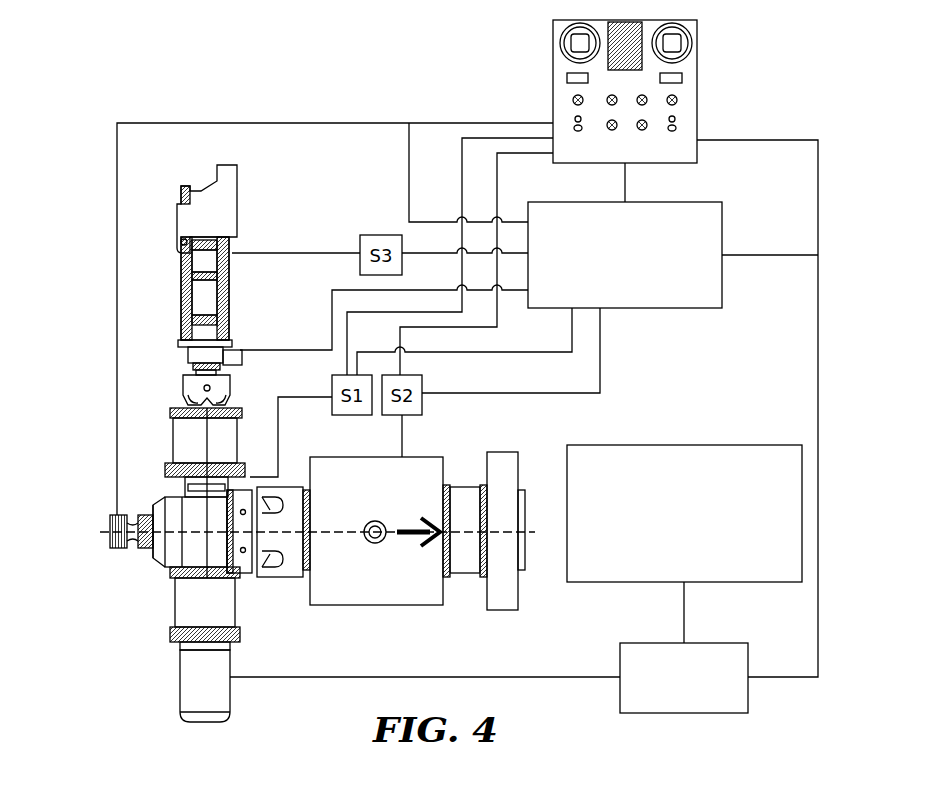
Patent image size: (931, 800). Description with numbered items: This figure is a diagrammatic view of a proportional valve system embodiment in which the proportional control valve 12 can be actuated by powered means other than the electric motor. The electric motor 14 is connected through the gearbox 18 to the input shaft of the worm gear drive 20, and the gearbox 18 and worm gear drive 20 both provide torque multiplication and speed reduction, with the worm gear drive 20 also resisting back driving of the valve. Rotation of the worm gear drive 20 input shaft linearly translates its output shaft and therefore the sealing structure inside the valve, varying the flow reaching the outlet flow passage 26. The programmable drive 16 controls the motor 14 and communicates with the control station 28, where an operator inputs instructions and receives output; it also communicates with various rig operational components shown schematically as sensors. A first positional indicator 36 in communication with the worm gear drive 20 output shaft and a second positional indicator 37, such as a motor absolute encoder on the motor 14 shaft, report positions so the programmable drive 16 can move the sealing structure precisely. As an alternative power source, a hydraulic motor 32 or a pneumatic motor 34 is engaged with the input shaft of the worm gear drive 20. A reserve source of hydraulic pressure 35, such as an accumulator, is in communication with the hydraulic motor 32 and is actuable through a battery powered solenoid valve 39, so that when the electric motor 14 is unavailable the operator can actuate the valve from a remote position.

The proportional control valve 12 is at (378, 613).
The electric motor 14 is at (232, 301).
The programmable drive 16 is at (612, 303).
The gearbox 18 is at (183, 384).
The worm gear drive 20 is at (148, 569).
The outlet flow passage 26 is at (519, 600).
The control station 28 is at (553, 98).
The hydraulic motor 32 is at (139, 686).
The pneumatic motor 34 is at (183, 690).
The reserve source of hydraulic pressure 35 is at (671, 562).
The first positional indicator 36 is at (109, 535).
The second positional indicator 37 is at (242, 357).
The solenoid valve 39 is at (720, 643).